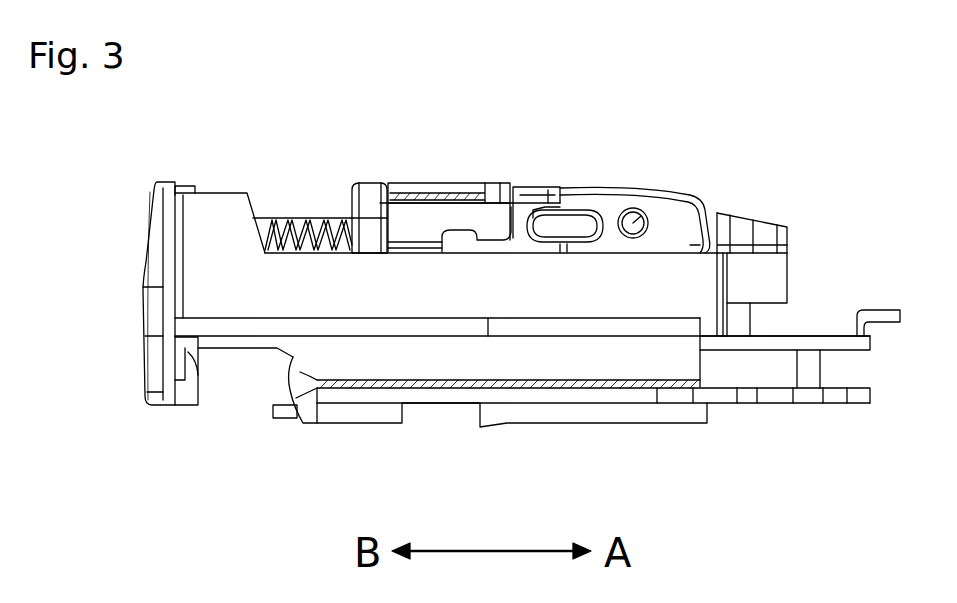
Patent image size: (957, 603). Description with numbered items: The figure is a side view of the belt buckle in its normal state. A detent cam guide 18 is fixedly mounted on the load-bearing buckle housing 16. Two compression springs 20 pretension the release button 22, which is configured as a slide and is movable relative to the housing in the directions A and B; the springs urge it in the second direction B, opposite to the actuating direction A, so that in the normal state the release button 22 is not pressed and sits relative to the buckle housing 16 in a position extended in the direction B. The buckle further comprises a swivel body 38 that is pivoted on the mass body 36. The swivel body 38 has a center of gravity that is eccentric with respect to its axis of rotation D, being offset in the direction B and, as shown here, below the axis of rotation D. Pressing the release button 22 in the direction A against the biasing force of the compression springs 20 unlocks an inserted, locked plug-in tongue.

The buckle housing 16 is at (797, 334).
The detent cam guide 18 is at (455, 198).
The compression springs 20 is at (303, 217).
The release button 22 is at (216, 222).
The mass body 36 is at (378, 197).
The swivel body 38 is at (620, 200).
The axis of rotation D is at (648, 218).